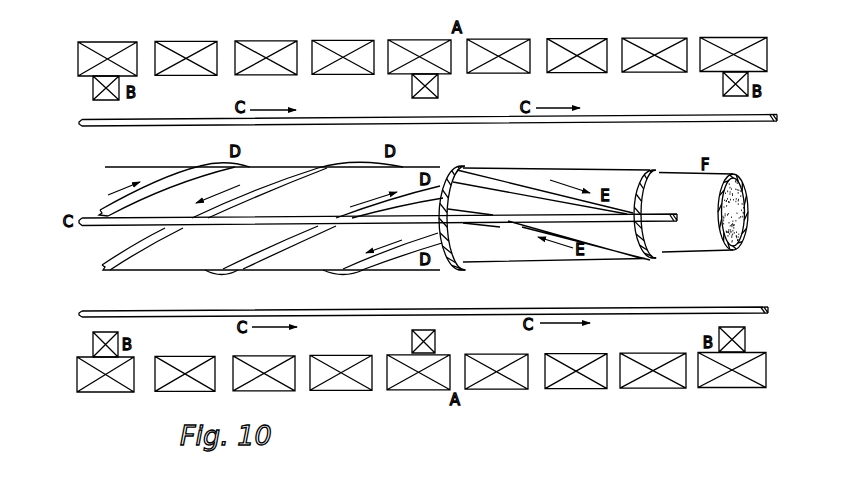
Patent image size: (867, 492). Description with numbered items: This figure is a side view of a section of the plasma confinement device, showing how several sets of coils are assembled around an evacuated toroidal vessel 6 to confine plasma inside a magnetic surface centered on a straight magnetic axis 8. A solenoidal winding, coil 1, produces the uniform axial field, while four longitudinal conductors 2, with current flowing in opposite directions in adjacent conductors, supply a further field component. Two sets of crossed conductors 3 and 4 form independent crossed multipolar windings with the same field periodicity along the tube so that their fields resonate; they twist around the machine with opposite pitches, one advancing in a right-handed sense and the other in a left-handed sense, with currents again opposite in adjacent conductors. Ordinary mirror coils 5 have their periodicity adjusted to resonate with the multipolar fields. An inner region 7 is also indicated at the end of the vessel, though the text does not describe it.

The coil 1 is at (416, 50).
The longitudinal conductors 2 is at (740, 122).
The crossed conductors 3 is at (173, 172).
The crossed conductors 4 is at (536, 186).
The mirror coils 5 is at (91, 87).
The evacuated toroidal vessel 6 is at (748, 239).
The intermediate layer 7 is at (739, 230).
The magnetic axis 8 is at (736, 210).